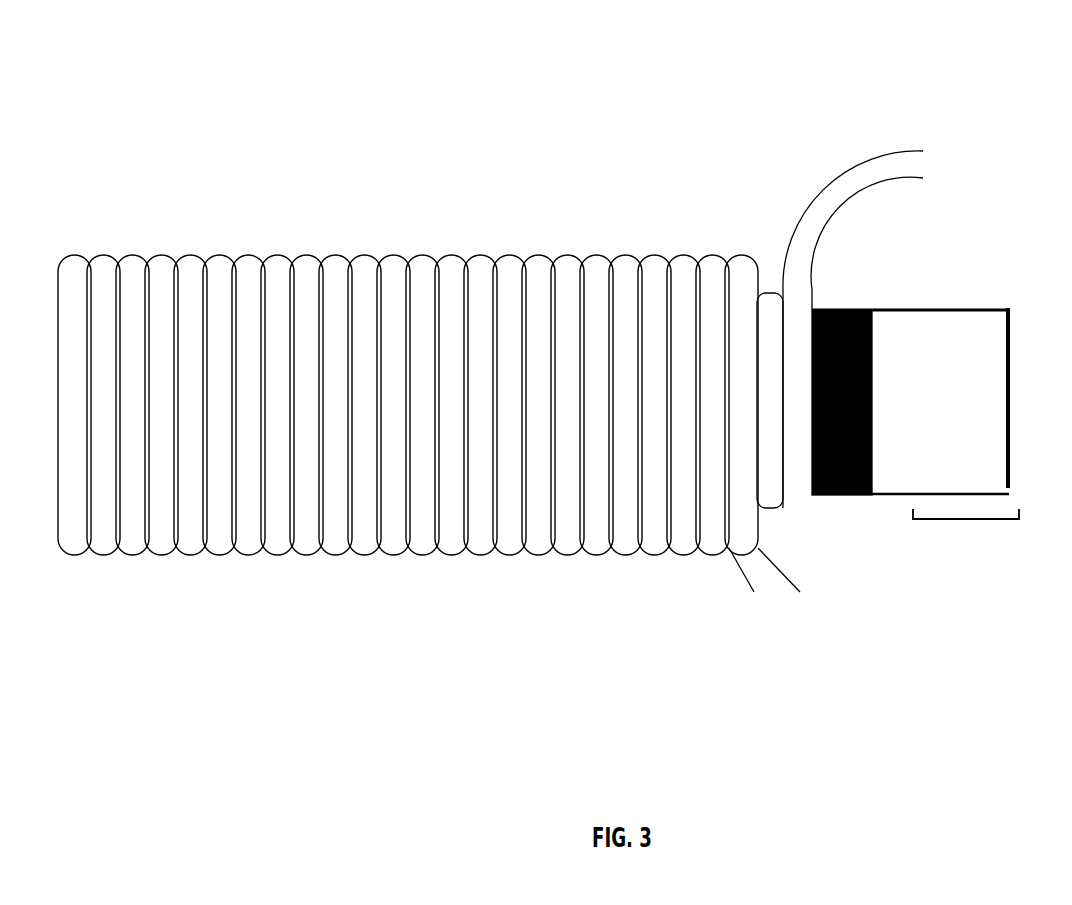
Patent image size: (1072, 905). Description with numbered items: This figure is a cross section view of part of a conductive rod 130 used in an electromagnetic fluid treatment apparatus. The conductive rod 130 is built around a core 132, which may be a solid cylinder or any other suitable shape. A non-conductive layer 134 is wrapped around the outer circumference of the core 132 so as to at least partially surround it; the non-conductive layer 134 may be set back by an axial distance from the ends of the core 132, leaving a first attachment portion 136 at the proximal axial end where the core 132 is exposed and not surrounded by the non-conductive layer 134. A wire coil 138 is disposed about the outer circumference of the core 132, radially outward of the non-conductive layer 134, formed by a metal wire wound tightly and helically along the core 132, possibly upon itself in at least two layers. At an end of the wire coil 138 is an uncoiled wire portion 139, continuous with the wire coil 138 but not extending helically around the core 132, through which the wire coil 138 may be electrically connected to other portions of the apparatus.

The conductive rod 130 is at (131, 113).
The core 132 is at (985, 357).
The non-conductive layer 134 is at (867, 497).
The first attachment portion 136 is at (960, 521).
The wire coil 138 is at (622, 528).
The uncoiled wire portion 139 is at (895, 166).